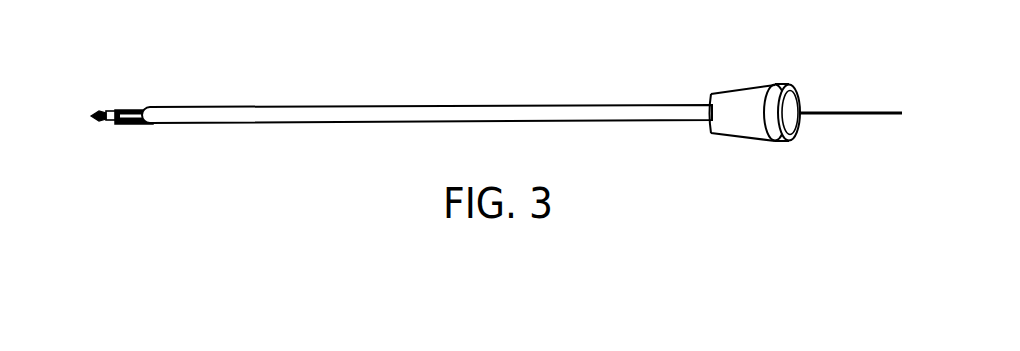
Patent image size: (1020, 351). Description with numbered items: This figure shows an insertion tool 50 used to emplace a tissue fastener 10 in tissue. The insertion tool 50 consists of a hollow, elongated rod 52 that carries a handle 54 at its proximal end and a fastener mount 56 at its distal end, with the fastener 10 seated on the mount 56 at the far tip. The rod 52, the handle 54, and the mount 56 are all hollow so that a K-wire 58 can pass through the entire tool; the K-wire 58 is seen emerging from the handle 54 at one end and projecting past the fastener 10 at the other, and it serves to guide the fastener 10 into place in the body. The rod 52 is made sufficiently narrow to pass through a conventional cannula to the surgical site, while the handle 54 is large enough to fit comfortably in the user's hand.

The tissue fastener 10 is at (108, 122).
The insertion tool 50 is at (470, 53).
The elongated rod 52 is at (402, 123).
The handle 54 is at (742, 93).
The fastener mount 56 is at (143, 93).
The K-wire 58 is at (102, 112).